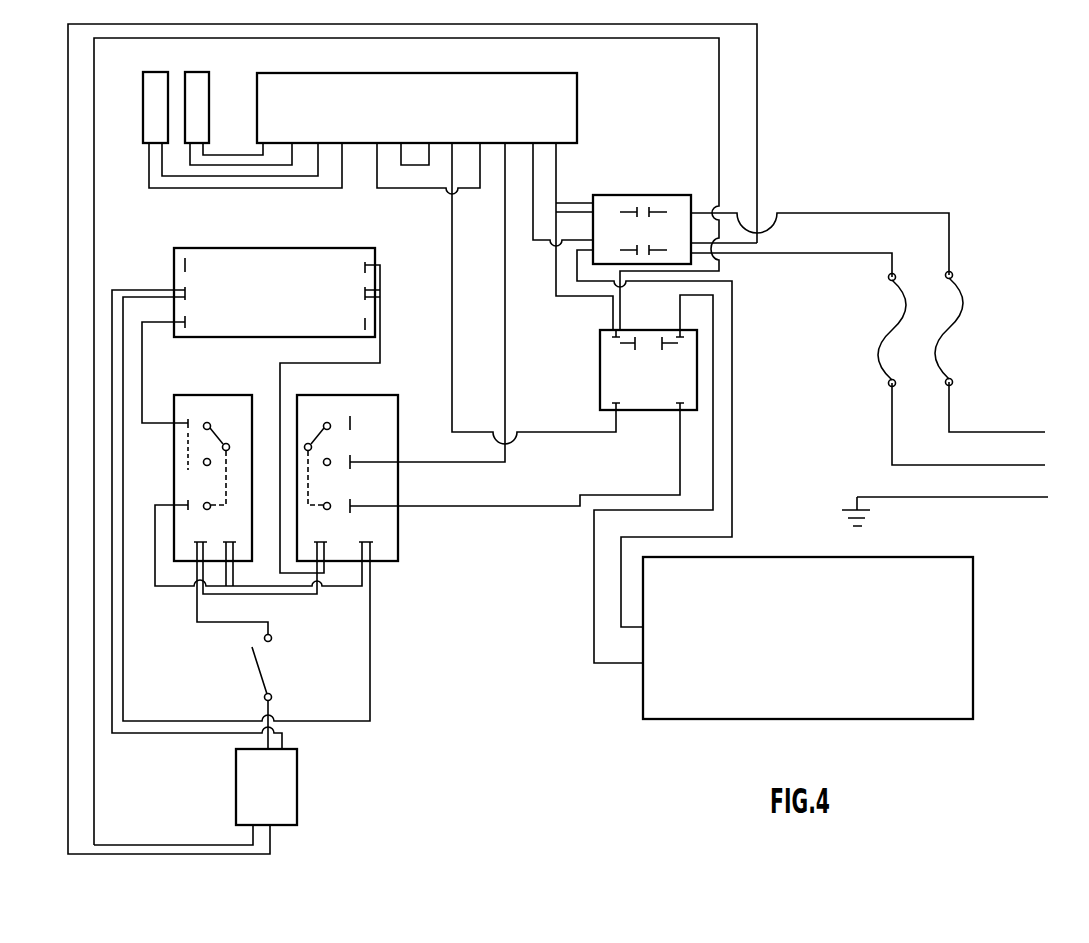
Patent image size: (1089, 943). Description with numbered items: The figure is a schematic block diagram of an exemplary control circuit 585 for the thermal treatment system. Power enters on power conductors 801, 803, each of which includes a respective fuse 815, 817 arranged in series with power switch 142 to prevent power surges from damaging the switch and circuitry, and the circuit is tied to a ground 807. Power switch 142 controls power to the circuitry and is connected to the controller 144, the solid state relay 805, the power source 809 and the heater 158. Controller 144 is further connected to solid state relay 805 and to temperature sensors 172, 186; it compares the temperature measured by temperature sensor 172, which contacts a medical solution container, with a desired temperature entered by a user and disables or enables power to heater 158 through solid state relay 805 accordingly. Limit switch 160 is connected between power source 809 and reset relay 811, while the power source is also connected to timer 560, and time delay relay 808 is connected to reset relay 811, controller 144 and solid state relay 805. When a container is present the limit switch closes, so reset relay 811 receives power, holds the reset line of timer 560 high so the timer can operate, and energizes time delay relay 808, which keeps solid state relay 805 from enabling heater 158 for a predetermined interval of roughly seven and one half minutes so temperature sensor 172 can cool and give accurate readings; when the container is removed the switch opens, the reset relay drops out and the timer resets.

The temperature sensor 186 is at (142, 110).
The temperature sensor 172 is at (210, 110).
The controller 144 is at (578, 115).
The control circuit 585 is at (812, 123).
The power switch 142 is at (625, 195).
The timer 560 is at (273, 248).
The solid state relay 805 is at (600, 372).
The reset relay 811 is at (174, 478).
The time delay relay 808 is at (398, 525).
The limit switch 160 is at (259, 668).
The power source 809 is at (297, 802).
The fuse 815 is at (877, 368).
The fuse 817 is at (968, 300).
The power conductor 803 is at (997, 432).
The power conductor 801 is at (1025, 465).
The ground 807 is at (953, 497).
The heater 158 is at (910, 720).